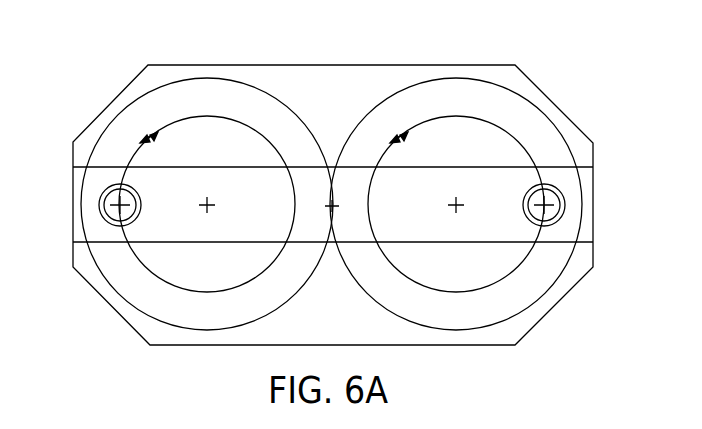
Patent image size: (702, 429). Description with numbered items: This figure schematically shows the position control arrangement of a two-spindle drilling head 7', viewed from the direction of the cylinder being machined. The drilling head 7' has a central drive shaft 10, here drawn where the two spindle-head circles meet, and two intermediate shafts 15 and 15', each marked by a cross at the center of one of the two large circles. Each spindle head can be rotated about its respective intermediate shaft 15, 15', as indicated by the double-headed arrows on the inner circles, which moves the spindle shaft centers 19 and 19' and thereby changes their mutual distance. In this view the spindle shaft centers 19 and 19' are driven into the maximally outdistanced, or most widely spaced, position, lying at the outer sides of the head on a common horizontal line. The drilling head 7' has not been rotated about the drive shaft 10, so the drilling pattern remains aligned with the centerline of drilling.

The drilling head 7' is at (333, 183).
The drive shaft 10 is at (332, 200).
The intermediate shaft 15 is at (190, 236).
The intermediate shaft 15' is at (435, 232).
The spindle shaft center 19 is at (88, 197).
The spindle shaft center 19' is at (583, 202).